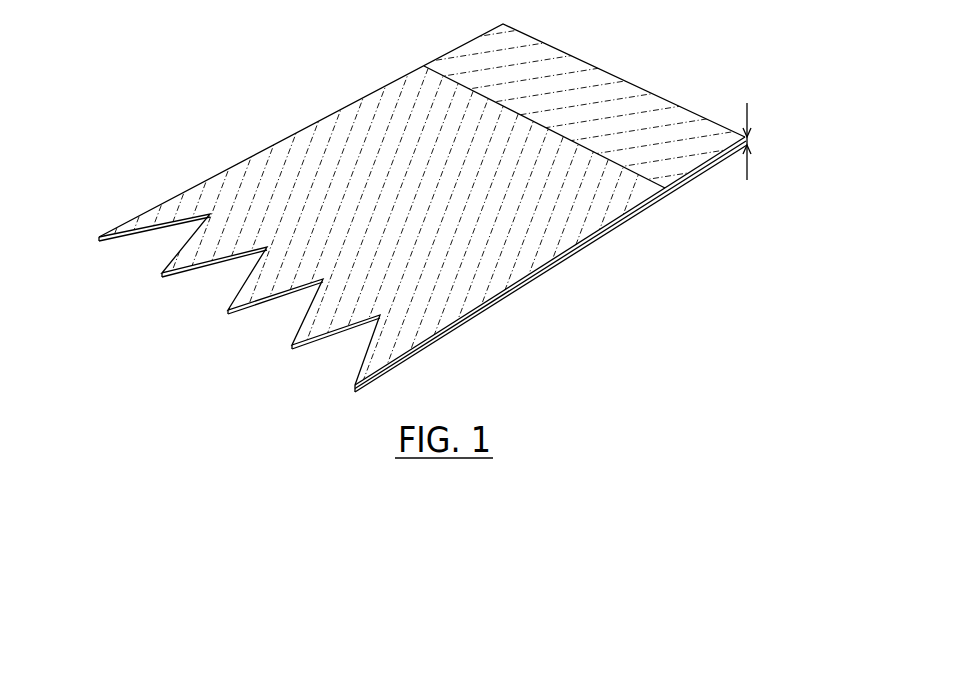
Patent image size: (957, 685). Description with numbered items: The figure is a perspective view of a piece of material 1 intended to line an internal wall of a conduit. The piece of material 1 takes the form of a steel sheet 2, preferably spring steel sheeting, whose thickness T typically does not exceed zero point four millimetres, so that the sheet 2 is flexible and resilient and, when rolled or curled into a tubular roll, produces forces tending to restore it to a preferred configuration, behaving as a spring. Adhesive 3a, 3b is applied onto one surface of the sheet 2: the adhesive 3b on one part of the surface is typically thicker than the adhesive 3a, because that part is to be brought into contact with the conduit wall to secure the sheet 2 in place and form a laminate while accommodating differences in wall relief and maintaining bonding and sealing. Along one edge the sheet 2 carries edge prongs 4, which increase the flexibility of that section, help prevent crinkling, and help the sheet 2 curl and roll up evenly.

The piece of material 1 is at (347, 84).
The steel sheet 2 is at (570, 255).
The adhesive 3a is at (321, 187).
The adhesive 3b is at (602, 93).
The edge prongs 4 is at (134, 241).
The thickness T is at (768, 136).